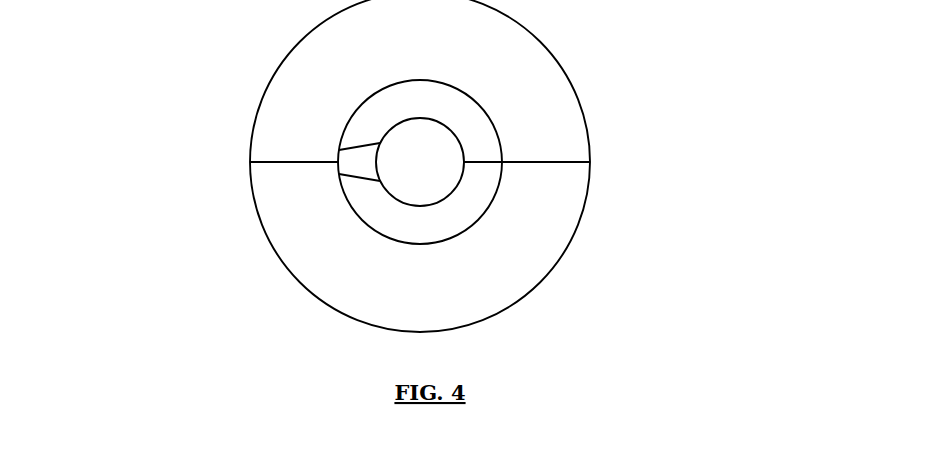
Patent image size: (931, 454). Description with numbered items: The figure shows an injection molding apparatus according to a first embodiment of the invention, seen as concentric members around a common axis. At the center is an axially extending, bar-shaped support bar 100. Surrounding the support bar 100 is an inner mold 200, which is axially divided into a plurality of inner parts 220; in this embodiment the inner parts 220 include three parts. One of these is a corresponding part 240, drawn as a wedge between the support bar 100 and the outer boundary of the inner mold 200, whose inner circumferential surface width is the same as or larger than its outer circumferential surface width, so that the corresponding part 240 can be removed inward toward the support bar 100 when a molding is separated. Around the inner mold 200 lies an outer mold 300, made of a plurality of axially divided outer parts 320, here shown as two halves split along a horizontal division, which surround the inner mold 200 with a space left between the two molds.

The support bar 100 is at (442, 140).
The inner mold 200 is at (302, 162).
The inner parts 220 is at (360, 126).
The corresponding part 240 is at (350, 157).
The outer mold 300 is at (507, 166).
The outer parts 320 is at (701, 217).